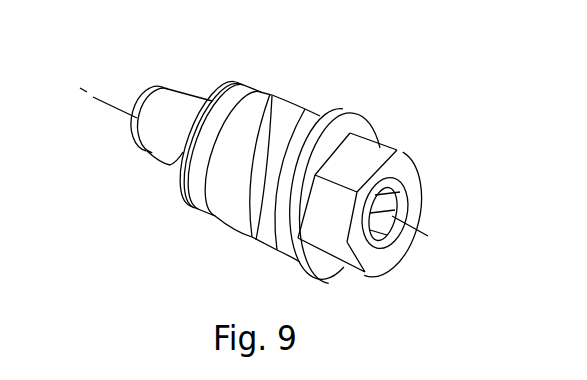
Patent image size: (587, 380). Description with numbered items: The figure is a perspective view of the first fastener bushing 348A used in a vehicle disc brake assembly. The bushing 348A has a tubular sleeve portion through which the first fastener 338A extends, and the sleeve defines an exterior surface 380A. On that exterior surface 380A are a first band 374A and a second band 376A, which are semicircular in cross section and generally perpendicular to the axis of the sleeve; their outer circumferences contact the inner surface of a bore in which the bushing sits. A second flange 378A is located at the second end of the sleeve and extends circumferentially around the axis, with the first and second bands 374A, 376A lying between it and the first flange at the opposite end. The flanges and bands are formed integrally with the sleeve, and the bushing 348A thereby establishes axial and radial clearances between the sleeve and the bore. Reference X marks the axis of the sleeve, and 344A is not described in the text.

The tip cylinder 344A is at (180, 93).
The second flange 378A is at (178, 152).
The second band 376A is at (200, 195).
The exterior surface 380A is at (272, 93).
The first band 374A is at (256, 198).
The first fastener bushing 348A is at (293, 94).
The first fastener 338A is at (345, 110).
The axis X is at (110, 98).